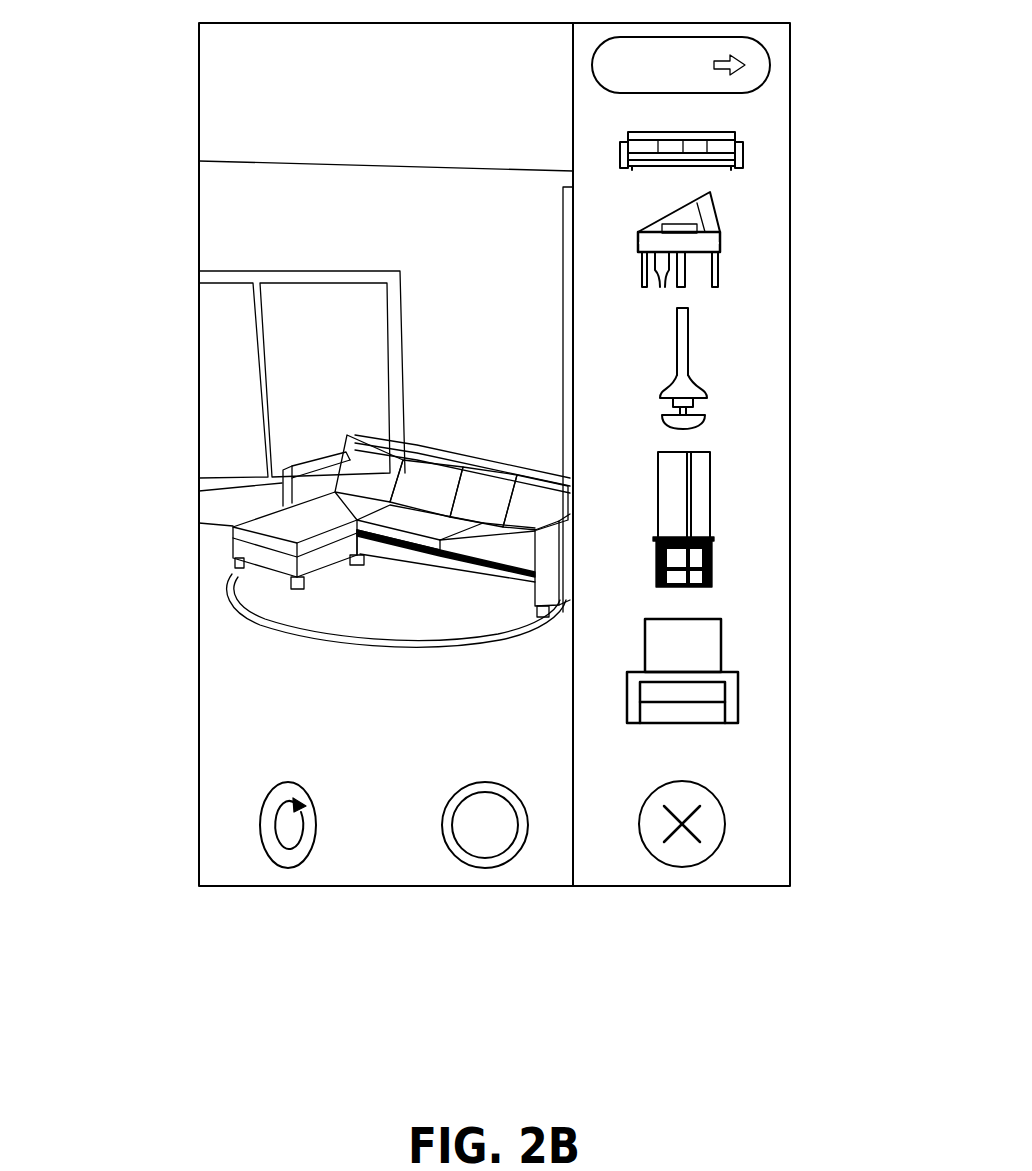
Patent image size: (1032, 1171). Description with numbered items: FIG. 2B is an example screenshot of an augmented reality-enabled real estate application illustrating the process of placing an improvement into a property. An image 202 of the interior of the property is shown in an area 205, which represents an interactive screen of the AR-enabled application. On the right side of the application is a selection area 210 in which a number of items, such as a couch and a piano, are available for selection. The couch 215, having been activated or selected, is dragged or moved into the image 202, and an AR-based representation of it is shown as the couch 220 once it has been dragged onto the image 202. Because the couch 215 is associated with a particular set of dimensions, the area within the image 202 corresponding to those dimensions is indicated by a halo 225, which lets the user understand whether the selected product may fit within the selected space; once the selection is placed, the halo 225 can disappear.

The image 202 is at (268, 660).
The area 205 is at (127, 23).
The selection area 210 is at (822, 108).
The couch 215 is at (744, 161).
The couch 220 is at (405, 563).
The halo 225 is at (358, 645).